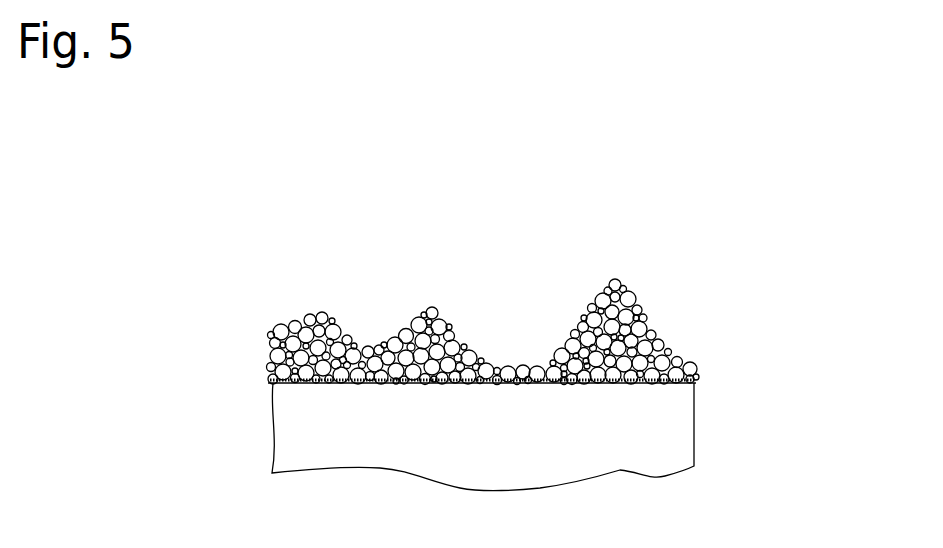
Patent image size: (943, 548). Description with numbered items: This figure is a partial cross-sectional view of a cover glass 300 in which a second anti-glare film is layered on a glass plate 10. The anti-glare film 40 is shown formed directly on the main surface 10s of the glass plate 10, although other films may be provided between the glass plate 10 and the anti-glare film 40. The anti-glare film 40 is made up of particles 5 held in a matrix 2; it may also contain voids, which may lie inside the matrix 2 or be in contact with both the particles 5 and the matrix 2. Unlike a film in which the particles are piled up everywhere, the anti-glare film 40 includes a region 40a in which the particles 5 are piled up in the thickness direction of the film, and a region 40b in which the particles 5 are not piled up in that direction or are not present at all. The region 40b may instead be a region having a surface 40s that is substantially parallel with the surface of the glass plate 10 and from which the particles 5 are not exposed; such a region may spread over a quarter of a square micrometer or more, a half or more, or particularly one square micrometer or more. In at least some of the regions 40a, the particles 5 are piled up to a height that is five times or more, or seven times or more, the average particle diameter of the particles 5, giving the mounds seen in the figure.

The cover glass 300 is at (673, 158).
The glass plate 10 is at (677, 433).
The main surface 10s is at (697, 370).
The anti-glare film 40 is at (655, 332).
The region 40a is at (288, 325).
The region 40b is at (510, 363).
The surface 40s is at (611, 283).
The particles 5 is at (428, 307).
The matrix 2 is at (537, 367).